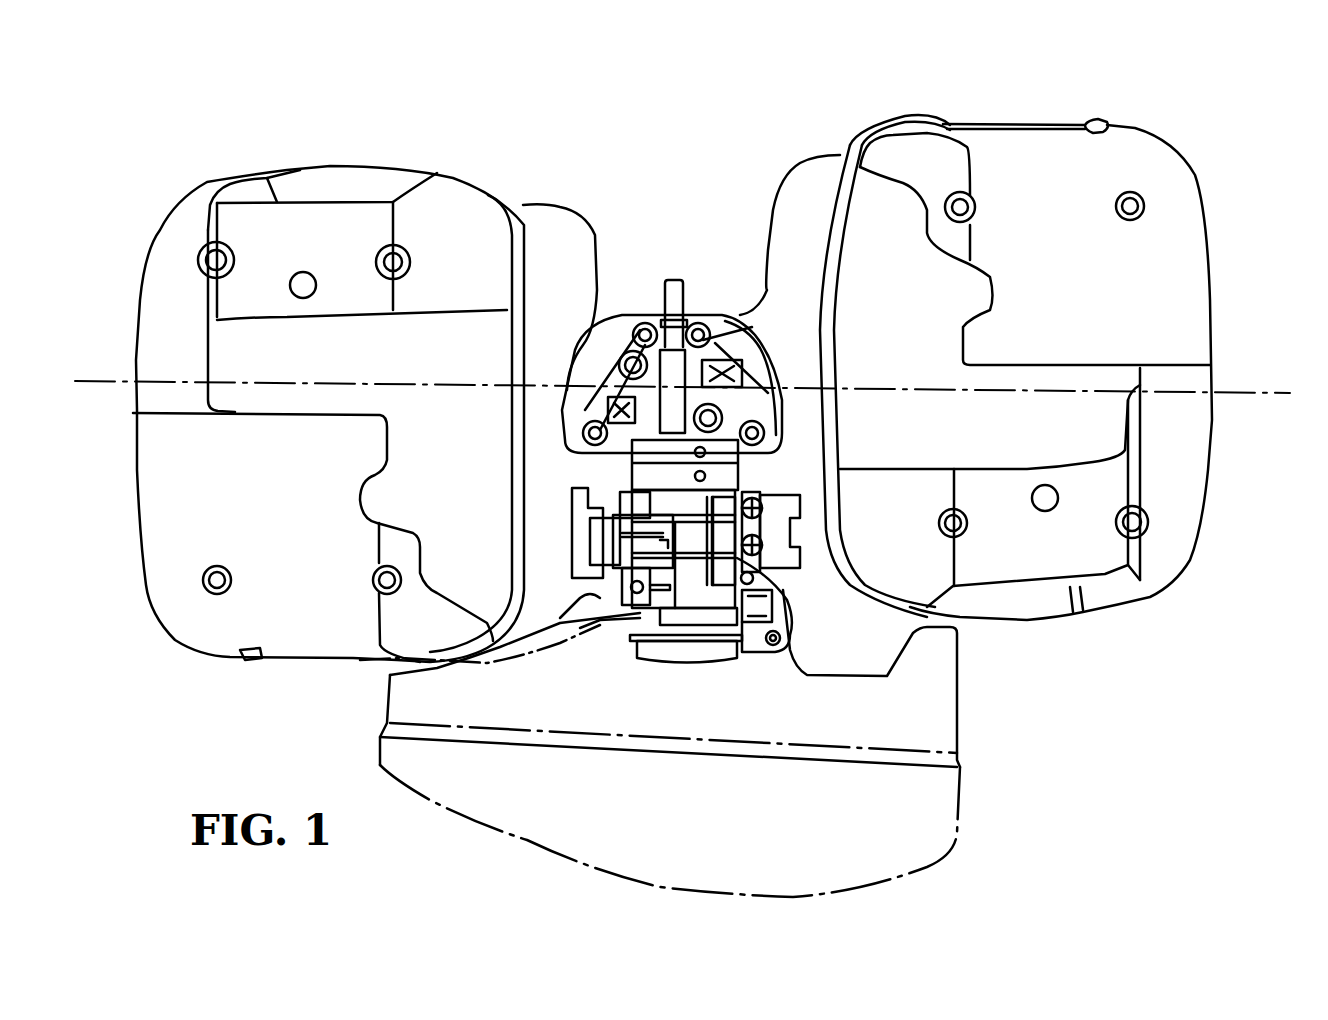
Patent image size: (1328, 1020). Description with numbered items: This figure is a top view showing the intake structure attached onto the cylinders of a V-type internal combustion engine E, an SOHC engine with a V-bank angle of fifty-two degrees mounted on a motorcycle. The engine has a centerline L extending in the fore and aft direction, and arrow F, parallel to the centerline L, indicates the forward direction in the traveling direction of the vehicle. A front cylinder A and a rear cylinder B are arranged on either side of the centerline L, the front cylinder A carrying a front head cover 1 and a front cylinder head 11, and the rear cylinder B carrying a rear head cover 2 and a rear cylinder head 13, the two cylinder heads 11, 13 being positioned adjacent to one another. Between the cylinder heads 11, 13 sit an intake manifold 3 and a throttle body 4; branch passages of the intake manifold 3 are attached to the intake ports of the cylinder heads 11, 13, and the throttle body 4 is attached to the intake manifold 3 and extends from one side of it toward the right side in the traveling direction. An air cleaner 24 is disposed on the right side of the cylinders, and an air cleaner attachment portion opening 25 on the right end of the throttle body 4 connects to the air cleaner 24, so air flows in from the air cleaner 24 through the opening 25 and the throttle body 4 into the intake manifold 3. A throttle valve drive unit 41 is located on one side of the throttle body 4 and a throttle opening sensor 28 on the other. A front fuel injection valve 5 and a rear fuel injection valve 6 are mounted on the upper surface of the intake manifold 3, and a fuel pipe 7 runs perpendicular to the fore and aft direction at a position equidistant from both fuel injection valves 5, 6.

The front head cover 1 is at (1010, 120).
The rear head cover 2 is at (327, 160).
The intake manifold 3 is at (793, 370).
The throttle body 4 is at (782, 477).
The front fuel injection valve 5 is at (703, 327).
The rear fuel injection valve 6 is at (585, 413).
The fuel pipe 7 is at (680, 312).
The front cylinder head 11 is at (815, 150).
The rear cylinder head 13 is at (542, 210).
The air cleaner 24 is at (960, 740).
The air cleaner attachment portion opening 25 is at (693, 667).
The throttle opening sensor 28 is at (560, 532).
The throttle valve drive unit 41 is at (803, 540).
The front cylinder A is at (1228, 135).
The rear cylinder B is at (180, 125).
The V-type internal combustion engine E is at (228, 732).
The arrow F is at (738, 92).
The centerline L is at (1252, 392).